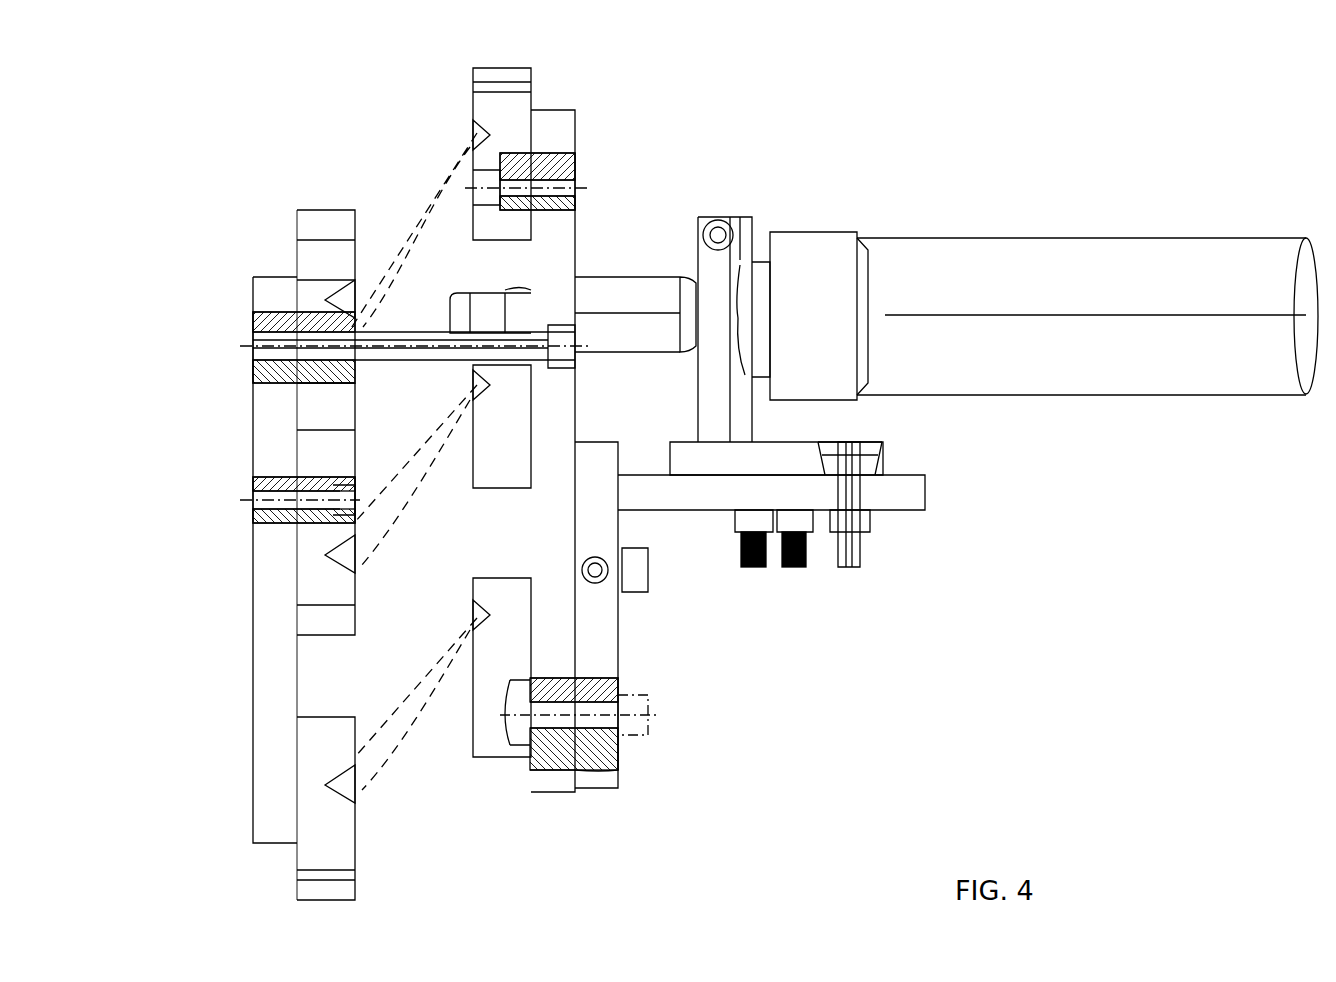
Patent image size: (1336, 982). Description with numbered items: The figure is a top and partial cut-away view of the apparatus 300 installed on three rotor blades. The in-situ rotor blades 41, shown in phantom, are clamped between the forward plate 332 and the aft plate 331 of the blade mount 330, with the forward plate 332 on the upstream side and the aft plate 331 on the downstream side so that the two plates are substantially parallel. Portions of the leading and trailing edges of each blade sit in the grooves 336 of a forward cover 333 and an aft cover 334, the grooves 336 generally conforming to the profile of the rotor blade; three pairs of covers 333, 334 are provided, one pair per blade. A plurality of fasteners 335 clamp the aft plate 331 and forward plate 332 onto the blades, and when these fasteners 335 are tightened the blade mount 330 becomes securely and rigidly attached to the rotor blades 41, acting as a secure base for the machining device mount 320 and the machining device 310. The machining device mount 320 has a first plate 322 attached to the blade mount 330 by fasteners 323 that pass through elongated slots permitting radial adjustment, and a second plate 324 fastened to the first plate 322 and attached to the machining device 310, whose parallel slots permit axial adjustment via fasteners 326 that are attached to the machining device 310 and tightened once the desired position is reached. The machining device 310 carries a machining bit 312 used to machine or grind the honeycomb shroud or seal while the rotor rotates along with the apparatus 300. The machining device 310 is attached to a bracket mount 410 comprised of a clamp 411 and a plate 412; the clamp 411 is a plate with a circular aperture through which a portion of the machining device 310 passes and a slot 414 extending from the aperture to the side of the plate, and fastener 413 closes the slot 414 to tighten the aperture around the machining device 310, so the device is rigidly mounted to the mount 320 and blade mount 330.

The apparatus 300 is at (1236, 133).
The machining device 310 is at (1100, 294).
The machining bit 312 is at (482, 302).
The machining device mount 320 is at (618, 782).
The first plate 322 is at (602, 628).
The fasteners 323 is at (648, 732).
The second plate 324 is at (698, 502).
The fasteners 326 is at (862, 555).
The blade mount 330 is at (225, 138).
The aft plate 331 is at (575, 110).
The forward plate 332 is at (253, 277).
The forward cover 333 is at (318, 222).
The aft cover 334 is at (500, 100).
The fasteners 335 is at (278, 343).
The grooves 336 is at (478, 138).
The rotor blades 41 is at (415, 210).
The bracket mount 410 is at (730, 200).
The clamp 411 is at (710, 290).
The plate 412 is at (690, 450).
The fastener 413 is at (706, 220).
The slot 414 is at (752, 222).